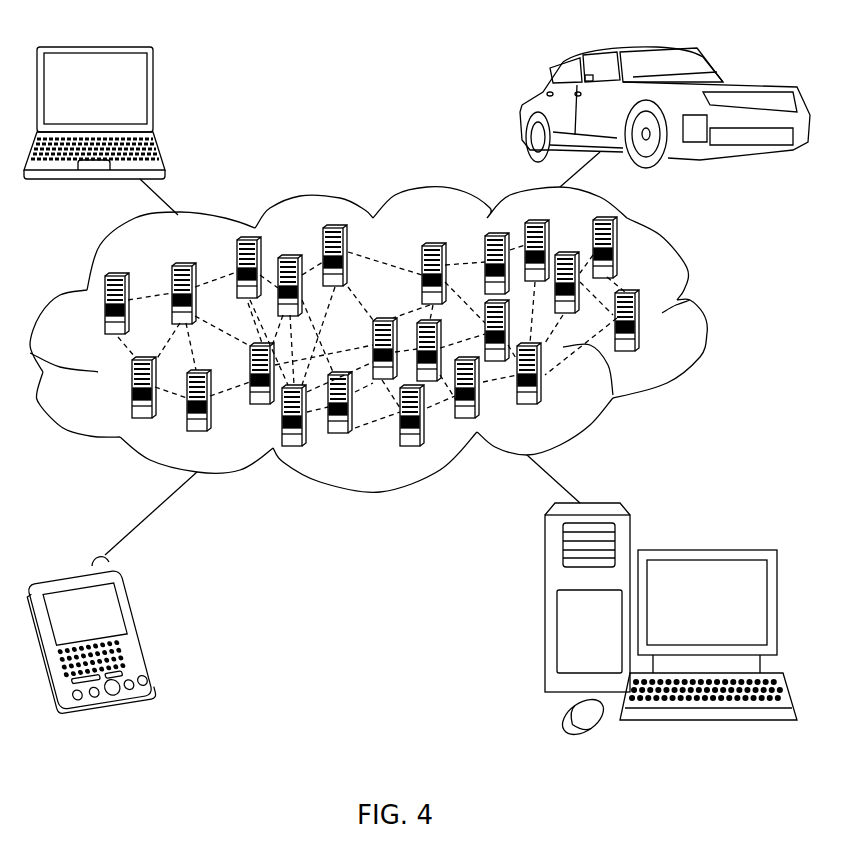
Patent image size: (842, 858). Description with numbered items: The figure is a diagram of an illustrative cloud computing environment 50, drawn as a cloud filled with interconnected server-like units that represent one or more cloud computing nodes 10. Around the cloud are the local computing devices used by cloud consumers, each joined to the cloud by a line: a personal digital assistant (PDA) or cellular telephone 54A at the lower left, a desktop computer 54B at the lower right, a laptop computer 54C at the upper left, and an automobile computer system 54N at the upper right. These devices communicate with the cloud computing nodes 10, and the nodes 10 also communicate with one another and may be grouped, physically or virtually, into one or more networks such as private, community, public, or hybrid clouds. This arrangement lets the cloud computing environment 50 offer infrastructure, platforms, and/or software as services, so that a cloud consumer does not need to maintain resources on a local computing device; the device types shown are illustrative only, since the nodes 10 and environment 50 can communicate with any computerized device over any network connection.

The cloud computing node 10 is at (664, 344).
The cloud computing environment 50 is at (391, 355).
The personal digital assistant (PDA) or cellular telephone 54A is at (143, 625).
The desktop computer 54B is at (708, 550).
The laptop computer 54C is at (153, 93).
The automobile computer system 54N is at (520, 106).